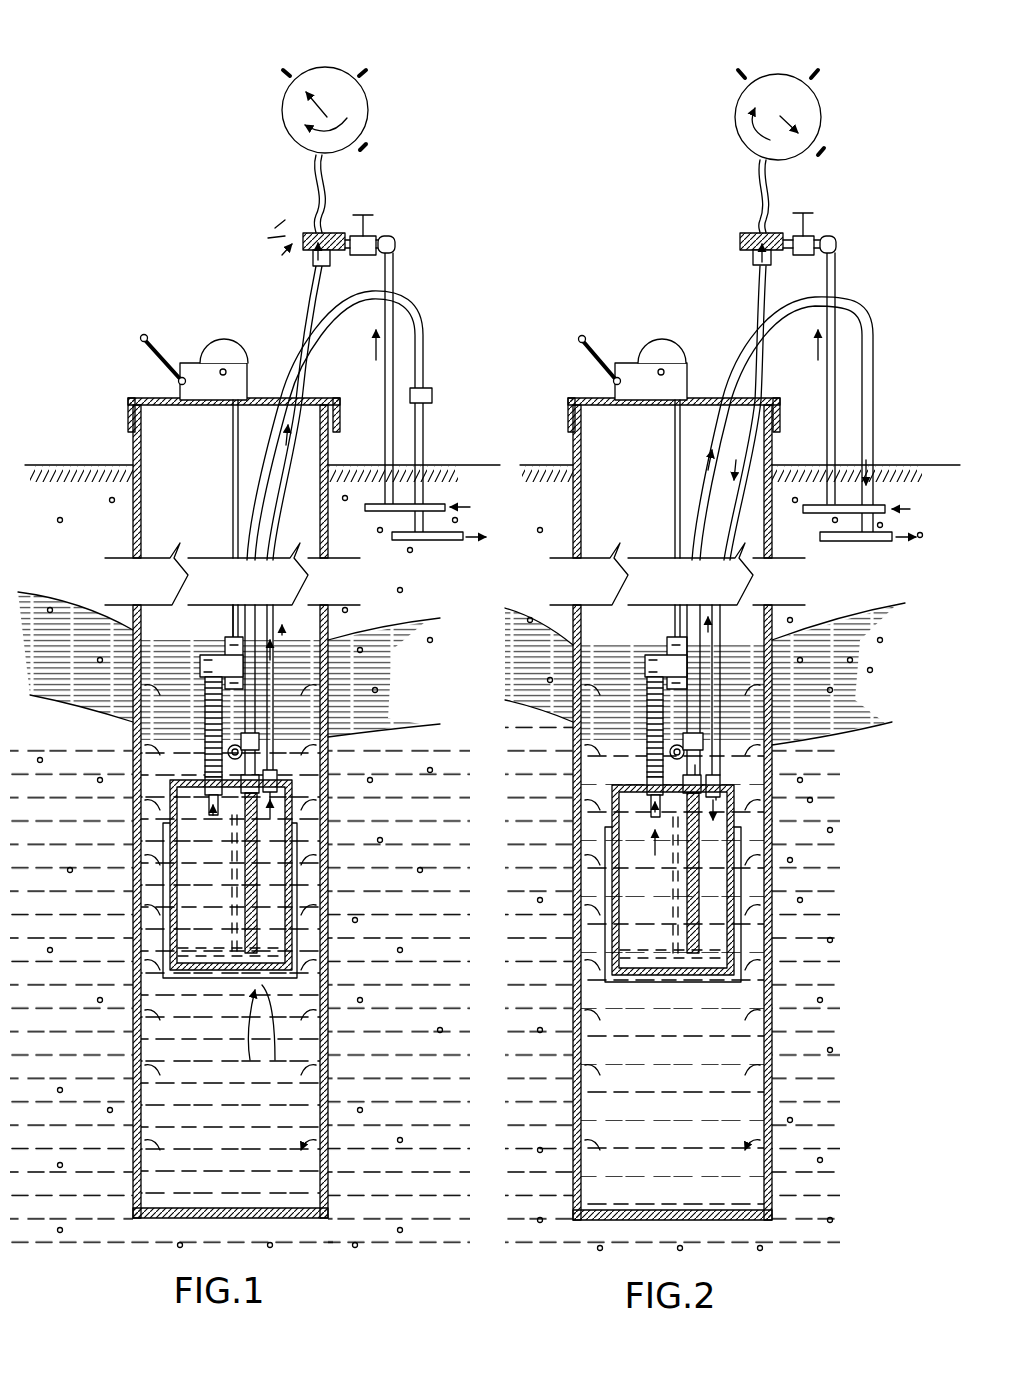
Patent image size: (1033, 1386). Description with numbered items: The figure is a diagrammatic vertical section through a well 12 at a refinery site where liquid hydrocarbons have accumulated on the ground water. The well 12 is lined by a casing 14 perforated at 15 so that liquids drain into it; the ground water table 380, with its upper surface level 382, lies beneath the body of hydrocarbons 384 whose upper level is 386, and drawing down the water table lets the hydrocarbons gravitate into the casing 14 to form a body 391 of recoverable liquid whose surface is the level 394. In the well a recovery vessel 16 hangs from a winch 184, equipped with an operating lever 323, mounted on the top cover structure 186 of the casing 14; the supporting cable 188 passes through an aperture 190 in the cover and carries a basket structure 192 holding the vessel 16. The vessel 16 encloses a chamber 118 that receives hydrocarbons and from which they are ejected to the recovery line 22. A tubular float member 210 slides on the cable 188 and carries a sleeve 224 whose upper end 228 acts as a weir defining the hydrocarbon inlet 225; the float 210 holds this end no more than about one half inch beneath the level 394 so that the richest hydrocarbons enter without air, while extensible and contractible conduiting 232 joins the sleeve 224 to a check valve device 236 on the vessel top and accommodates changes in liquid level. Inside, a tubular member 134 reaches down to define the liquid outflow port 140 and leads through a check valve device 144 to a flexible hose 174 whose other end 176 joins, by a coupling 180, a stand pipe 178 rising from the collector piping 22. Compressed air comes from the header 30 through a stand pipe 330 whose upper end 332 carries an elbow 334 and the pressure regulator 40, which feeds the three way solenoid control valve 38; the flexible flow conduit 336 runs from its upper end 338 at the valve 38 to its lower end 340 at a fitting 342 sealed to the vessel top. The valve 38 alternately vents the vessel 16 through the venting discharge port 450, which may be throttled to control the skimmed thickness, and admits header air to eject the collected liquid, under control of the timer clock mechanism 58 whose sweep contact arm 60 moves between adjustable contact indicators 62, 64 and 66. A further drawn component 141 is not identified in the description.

In FIG. 1, the well 12 is at (120, 272).
In FIG. 2, the well 12 is at (660, 295).
In FIG. 1, the casing 14 is at (130, 440).
In FIG. 2, the casing 14 is at (572, 1085).
In FIG. 1, the perforations 15 is at (100, 615).
In FIG. 2, the perforations 15 is at (560, 840).
In FIG. 1, the hydrocarbon receiving and ejecting vessel 16 is at (165, 900).
In FIG. 2, the hydrocarbon receiving and ejecting vessel 16 is at (772, 842).
In FIG. 1, the recovery line 22 is at (450, 542).
In FIG. 2, the recovery line 22 is at (892, 530).
In FIG. 1, the compressed air supply header 30 is at (440, 500).
In FIG. 2, the compressed air supply header 30 is at (875, 500).
In FIG. 1, the three way solenoid operated control valve 38 is at (298, 210).
In FIG. 2, the three way solenoid operated control valve 38 is at (764, 196).
In FIG. 1, the pressure regulator 40 is at (382, 180).
In FIG. 1, the clock mechanism 58 is at (360, 60).
In FIG. 2, the clock mechanism 58 is at (795, 62).
In FIG. 1, the sweep contact arm 60 is at (330, 95).
In FIG. 2, the sweep contact arm 60 is at (805, 117).
In FIG. 1, the contact indicator 62 is at (284, 68).
In FIG. 2, the contact indicator 62 is at (738, 68).
In FIG. 1, the contact indicator 64 is at (370, 70).
In FIG. 2, the contact indicator 64 is at (822, 78).
In FIG. 1, the contact indicator 66 is at (370, 146).
In FIG. 2, the contact indicator 66 is at (830, 150).
In FIG. 1, the vessel chamber 118 is at (160, 830).
In FIG. 2, the vessel chamber 118 is at (673, 904).
In FIG. 1, the tubular member 134 is at (243, 890).
In FIG. 2, the tubular member 134 is at (693, 873).
In FIG. 1, the vessel chamber liquid outflow port 140 is at (262, 985).
In FIG. 2, the tube 141 is at (706, 760).
In FIG. 1, the check valve device 144 is at (262, 752).
In FIG. 1, the flexible hose 174 is at (395, 320).
In FIG. 2, the flexible hose 174 is at (872, 345).
In FIG. 1, the other end of flexible hose 176 is at (425, 345).
In FIG. 1, the stand pipe 178 is at (425, 432).
In FIG. 1, the coupling 180 is at (432, 392).
In FIG. 1, the winch 184 is at (205, 320).
In FIG. 2, the winch 184 is at (628, 330).
In FIG. 1, the top cover structure 186 is at (160, 400).
In FIG. 1, the supporting cable 188 is at (232, 470).
In FIG. 1, the aperture 190 is at (293, 380).
In FIG. 1, the basket structure 192 is at (237, 1044).
In FIG. 1, the tubular float member 210 is at (233, 632).
In FIG. 1, the sleeve 224 is at (200, 668).
In FIG. 2, the sleeve 224 is at (655, 727).
In FIG. 1, the hydrocarbon inlet 225 is at (198, 660).
In FIG. 2, the hydrocarbon inlet 225 is at (666, 663).
In FIG. 1, the upper end of sleeve 228 is at (230, 630).
In FIG. 2, the upper end of sleeve 228 is at (684, 635).
In FIG. 1, the extensible and contractible conduiting 232 is at (225, 750).
In FIG. 2, the extensible and contractible conduiting 232 is at (677, 752).
In FIG. 1, the check valve device 236 is at (200, 790).
In FIG. 2, the check valve device 236 is at (652, 868).
In FIG. 1, the operating lever 323 is at (156, 336).
In FIG. 2, the operating lever 323 is at (600, 360).
In FIG. 1, the stand pipe 330 is at (395, 255).
In FIG. 2, the stand pipe 330 is at (801, 234).
In FIG. 1, the upper end of stand pipe 332 is at (395, 240).
In FIG. 2, the upper end of stand pipe 332 is at (828, 244).
In FIG. 1, the elbow 334 is at (375, 240).
In FIG. 1, the flexible flow conduit 336 is at (310, 530).
In FIG. 2, the flexible flow conduit 336 is at (778, 330).
In FIG. 1, the upper end of flexible flow conduit 338 is at (315, 288).
In FIG. 1, the lower end of flexible flow conduit 340 is at (265, 780).
In FIG. 2, the lower end of flexible flow conduit 340 is at (692, 784).
In FIG. 1, the fitting 342 is at (285, 800).
In FIG. 2, the fitting 342 is at (713, 797).
In FIG. 1, the ground water table 380 is at (125, 1228).
In FIG. 2, the ground water table 380 is at (822, 878).
In FIG. 1, the upper surface level of ground water table 382 is at (392, 738).
In FIG. 2, the upper surface level of ground water table 382 is at (838, 735).
In FIG. 1, the body of liquid hydrocarbons 384 is at (24, 600).
In FIG. 2, the body of liquid hydrocarbons 384 is at (870, 650).
In FIG. 1, the upper level of hydrocarbons 386 is at (75, 598).
In FIG. 2, the upper level of hydrocarbons 386 is at (820, 625).
In FIG. 1, the body of recoverable liquid hydrocarbons 391 is at (287, 640).
In FIG. 2, the body of recoverable liquid hydrocarbons 391 is at (632, 640).
In FIG. 1, the level of hydrocarbon liquid in well 394 is at (282, 620).
In FIG. 2, the level of hydrocarbon liquid in well 394 is at (728, 620).
In FIG. 1, the venting discharge port 450 is at (330, 258).
In FIG. 2, the venting discharge port 450 is at (745, 248).